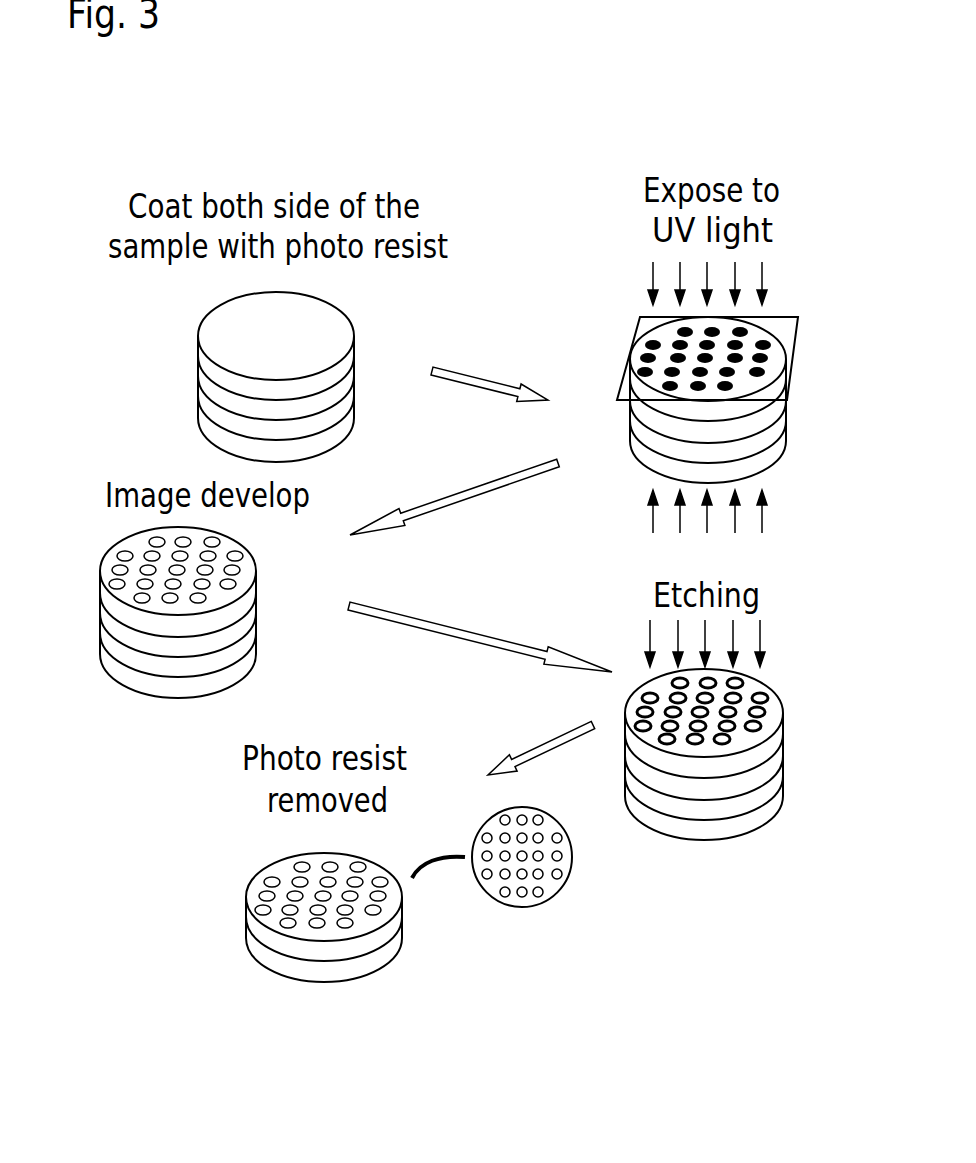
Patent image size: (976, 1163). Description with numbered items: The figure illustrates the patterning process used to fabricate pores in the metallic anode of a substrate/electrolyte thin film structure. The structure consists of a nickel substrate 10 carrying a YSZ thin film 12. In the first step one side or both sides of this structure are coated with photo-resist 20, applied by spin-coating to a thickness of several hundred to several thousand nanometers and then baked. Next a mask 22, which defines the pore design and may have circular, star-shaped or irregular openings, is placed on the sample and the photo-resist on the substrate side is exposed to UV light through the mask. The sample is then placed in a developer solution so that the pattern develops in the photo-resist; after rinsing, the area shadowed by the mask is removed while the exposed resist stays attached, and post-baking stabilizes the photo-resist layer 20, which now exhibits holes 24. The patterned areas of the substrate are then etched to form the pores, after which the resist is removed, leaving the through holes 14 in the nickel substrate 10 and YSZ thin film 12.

The nickel substrate 10 is at (198, 375).
The YSZ thin film 12 is at (197, 395).
The through holes 14 is at (383, 895).
The photo-resist 20 is at (356, 415).
The mask 22 is at (640, 322).
The holes 24 is at (122, 553).